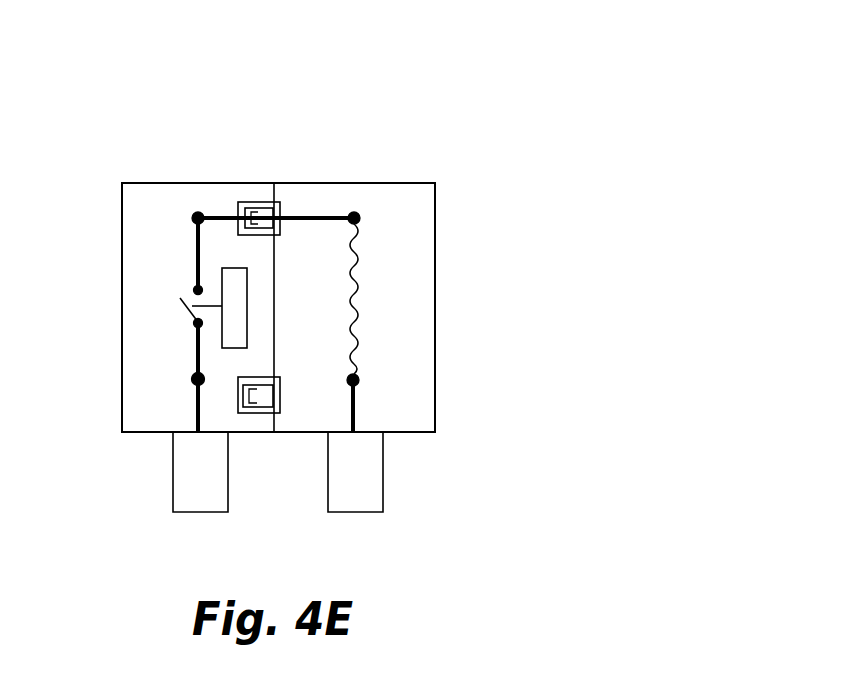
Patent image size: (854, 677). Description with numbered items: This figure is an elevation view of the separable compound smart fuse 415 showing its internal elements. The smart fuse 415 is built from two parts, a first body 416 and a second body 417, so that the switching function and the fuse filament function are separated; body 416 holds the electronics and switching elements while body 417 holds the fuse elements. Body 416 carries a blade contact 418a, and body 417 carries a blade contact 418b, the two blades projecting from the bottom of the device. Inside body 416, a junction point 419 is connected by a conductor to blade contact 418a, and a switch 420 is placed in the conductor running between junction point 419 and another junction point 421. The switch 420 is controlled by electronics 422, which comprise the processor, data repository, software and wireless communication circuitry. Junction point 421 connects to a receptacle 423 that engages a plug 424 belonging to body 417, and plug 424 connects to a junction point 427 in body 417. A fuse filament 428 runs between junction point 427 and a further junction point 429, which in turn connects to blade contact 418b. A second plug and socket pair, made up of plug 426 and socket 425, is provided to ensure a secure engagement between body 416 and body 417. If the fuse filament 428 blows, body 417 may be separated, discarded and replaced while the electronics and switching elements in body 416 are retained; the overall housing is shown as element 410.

The relay module housing 410 is at (308, 326).
The smart fuse 415 is at (329, 239).
The first body 416 is at (170, 183).
The second body 417 is at (400, 183).
The blade contact 418a is at (192, 467).
The blade contact 418b is at (350, 467).
The junction point 419 is at (192, 380).
The switch 420 is at (175, 312).
The junction point 421 is at (183, 218).
The electronics 422 is at (242, 315).
The receptacle 423 is at (248, 201).
The plug 424 is at (280, 205).
The socket 425 is at (248, 377).
The plug 426 is at (280, 402).
The junction point 427 is at (360, 217).
The fuse filament 428 is at (357, 300).
The junction point 429 is at (362, 378).